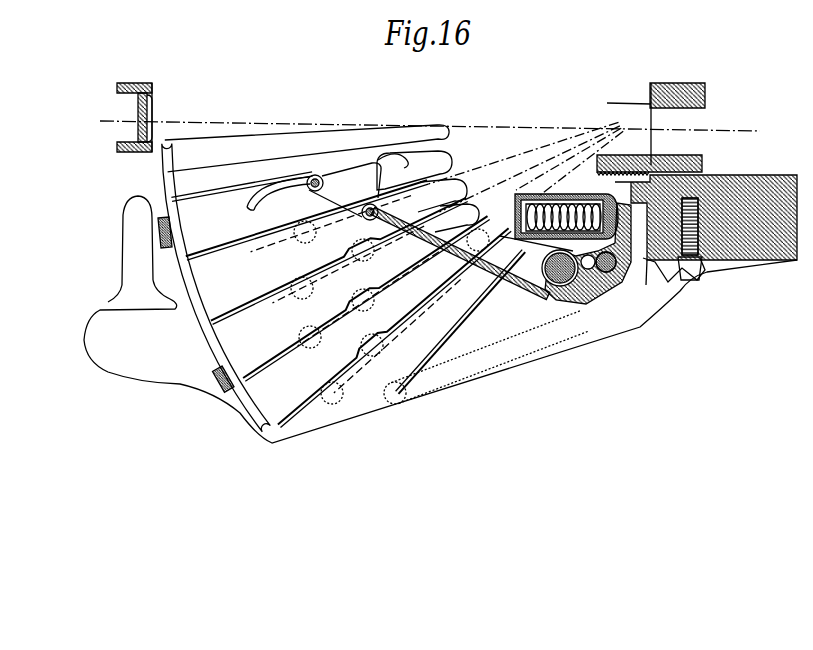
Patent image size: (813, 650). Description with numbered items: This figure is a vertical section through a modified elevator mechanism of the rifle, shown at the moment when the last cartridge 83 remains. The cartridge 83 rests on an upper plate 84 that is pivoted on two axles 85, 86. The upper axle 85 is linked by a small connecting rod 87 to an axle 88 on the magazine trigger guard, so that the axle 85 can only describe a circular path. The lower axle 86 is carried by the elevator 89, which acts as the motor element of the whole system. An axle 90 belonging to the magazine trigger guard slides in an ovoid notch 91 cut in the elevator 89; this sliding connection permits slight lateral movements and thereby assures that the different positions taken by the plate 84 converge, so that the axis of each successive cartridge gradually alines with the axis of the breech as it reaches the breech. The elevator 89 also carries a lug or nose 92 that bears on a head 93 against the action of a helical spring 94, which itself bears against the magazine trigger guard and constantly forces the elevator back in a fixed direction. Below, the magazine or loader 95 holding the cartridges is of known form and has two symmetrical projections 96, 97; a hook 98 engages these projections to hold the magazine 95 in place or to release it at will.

The last cartridge 83 is at (290, 146).
The plate 84 is at (396, 156).
The axle 85 is at (312, 191).
The axle 86 is at (364, 219).
The rod 87 is at (430, 204).
The axle 88 is at (543, 289).
The elevator 89 is at (476, 250).
The axle 90 is at (612, 270).
The ovoid notch 91 is at (588, 270).
The lug or nose 92 is at (640, 266).
The head 93 is at (704, 166).
The helical spring 94 is at (545, 203).
The magazine or loader 95 is at (180, 243).
The symmetrical projection 96 is at (158, 227).
The symmetrical projection 97 is at (220, 380).
The hook 98 is at (140, 222).